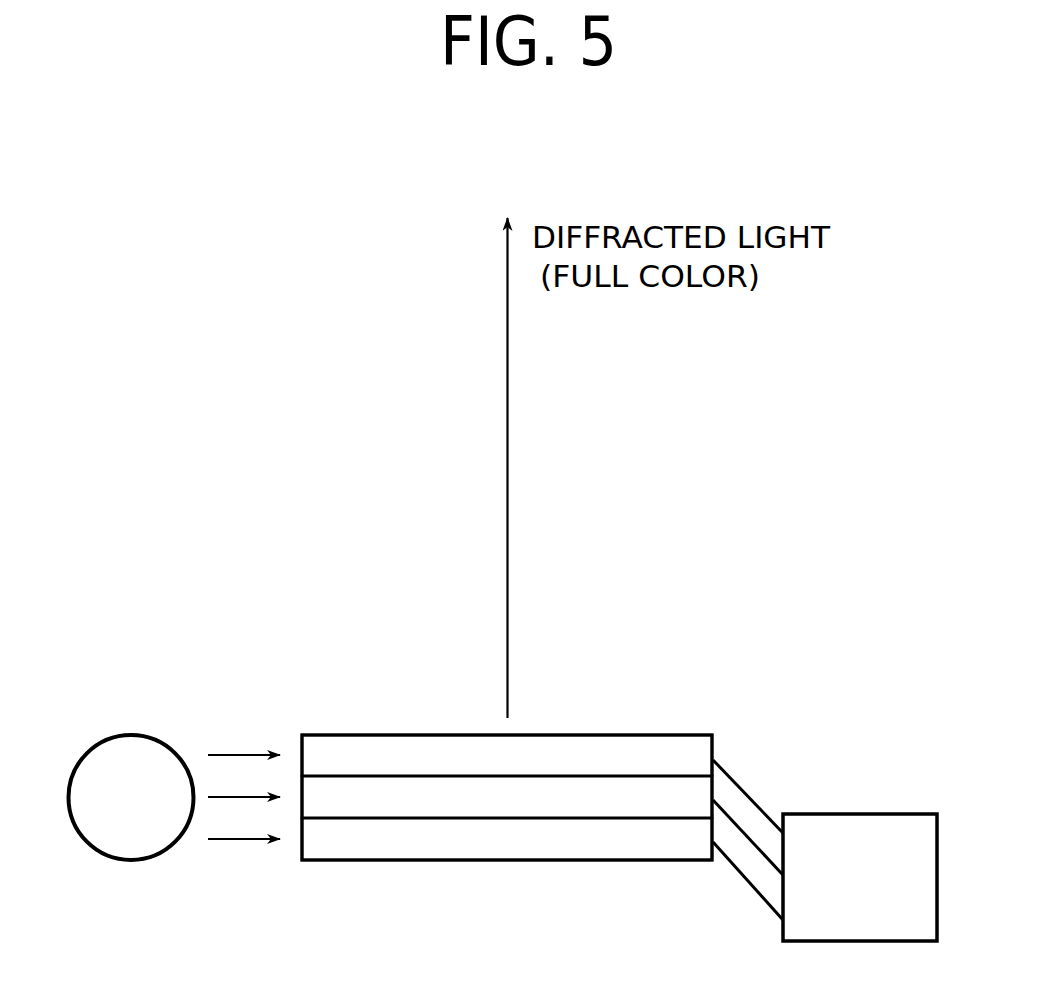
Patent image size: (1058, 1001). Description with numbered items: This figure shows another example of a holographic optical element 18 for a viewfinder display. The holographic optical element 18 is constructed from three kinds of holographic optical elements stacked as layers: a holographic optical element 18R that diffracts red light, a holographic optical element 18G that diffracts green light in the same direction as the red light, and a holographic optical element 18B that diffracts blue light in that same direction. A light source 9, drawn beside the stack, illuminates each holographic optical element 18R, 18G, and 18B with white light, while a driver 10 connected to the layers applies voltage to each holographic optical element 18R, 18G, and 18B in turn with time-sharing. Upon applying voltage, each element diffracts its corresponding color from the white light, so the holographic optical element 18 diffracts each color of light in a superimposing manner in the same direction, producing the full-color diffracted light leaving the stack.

The light source 9 is at (127, 862).
The holographic optical element 18 is at (542, 790).
The holographic optical element diffracting red light 18R is at (336, 758).
The holographic optical element diffracting green light 18G is at (333, 800).
The holographic optical element diffracting blue light 18B is at (432, 837).
The driver 10 is at (868, 813).